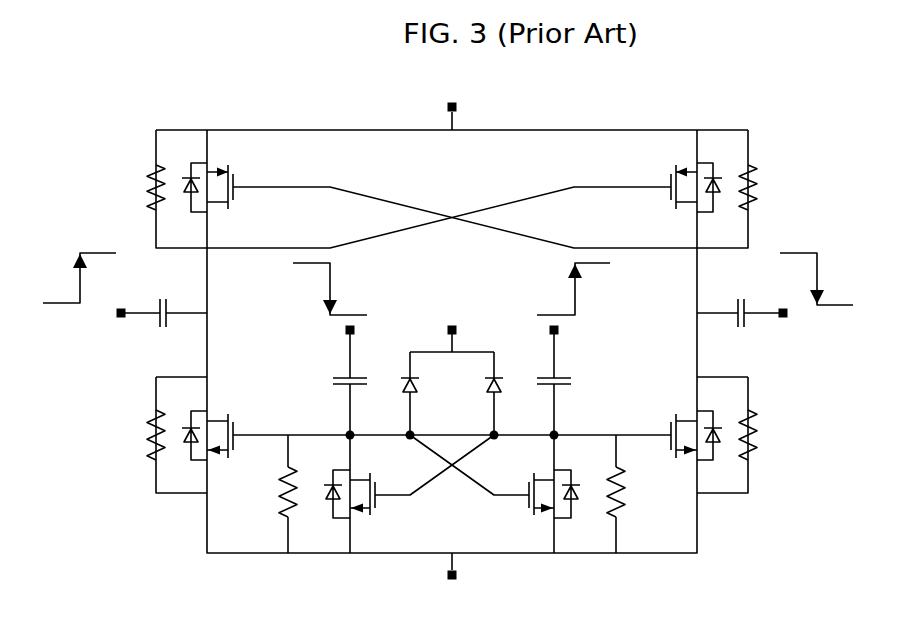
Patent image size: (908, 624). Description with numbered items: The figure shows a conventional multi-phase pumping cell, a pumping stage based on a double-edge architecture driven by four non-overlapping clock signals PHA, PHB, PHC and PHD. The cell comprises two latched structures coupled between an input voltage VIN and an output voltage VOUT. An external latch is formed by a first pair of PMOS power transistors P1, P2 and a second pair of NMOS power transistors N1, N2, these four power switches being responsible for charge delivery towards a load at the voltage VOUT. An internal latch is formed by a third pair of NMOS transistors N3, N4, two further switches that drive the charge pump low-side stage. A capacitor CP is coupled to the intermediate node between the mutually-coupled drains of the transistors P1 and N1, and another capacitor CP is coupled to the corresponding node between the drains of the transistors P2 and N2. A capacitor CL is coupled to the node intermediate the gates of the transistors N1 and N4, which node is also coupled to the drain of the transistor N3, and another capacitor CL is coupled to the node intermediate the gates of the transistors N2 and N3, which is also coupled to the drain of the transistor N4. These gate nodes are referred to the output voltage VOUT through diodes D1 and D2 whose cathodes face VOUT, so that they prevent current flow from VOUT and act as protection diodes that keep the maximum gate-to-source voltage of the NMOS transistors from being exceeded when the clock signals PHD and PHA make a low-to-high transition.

The power MOS transistor P1 is at (234, 178).
The power MOS transistor P2 is at (670, 178).
The power MOS transistor N1 is at (217, 421).
The power MOS transistor N2 is at (687, 421).
The NMOS transistor N3 is at (358, 510).
The NMOS transistor N4 is at (546, 510).
The diode D1 is at (403, 384).
The diode D2 is at (501, 384).
The capacitor CL is at (575, 346).
The capacitor CP is at (777, 350).
The output voltage VOUT is at (452, 207).
The input voltage VIN is at (443, 583).
The clock signal PHA is at (336, 299).
The clock signal PHB is at (84, 285).
The clock signal PHC is at (824, 285).
The clock signal PHD is at (579, 299).